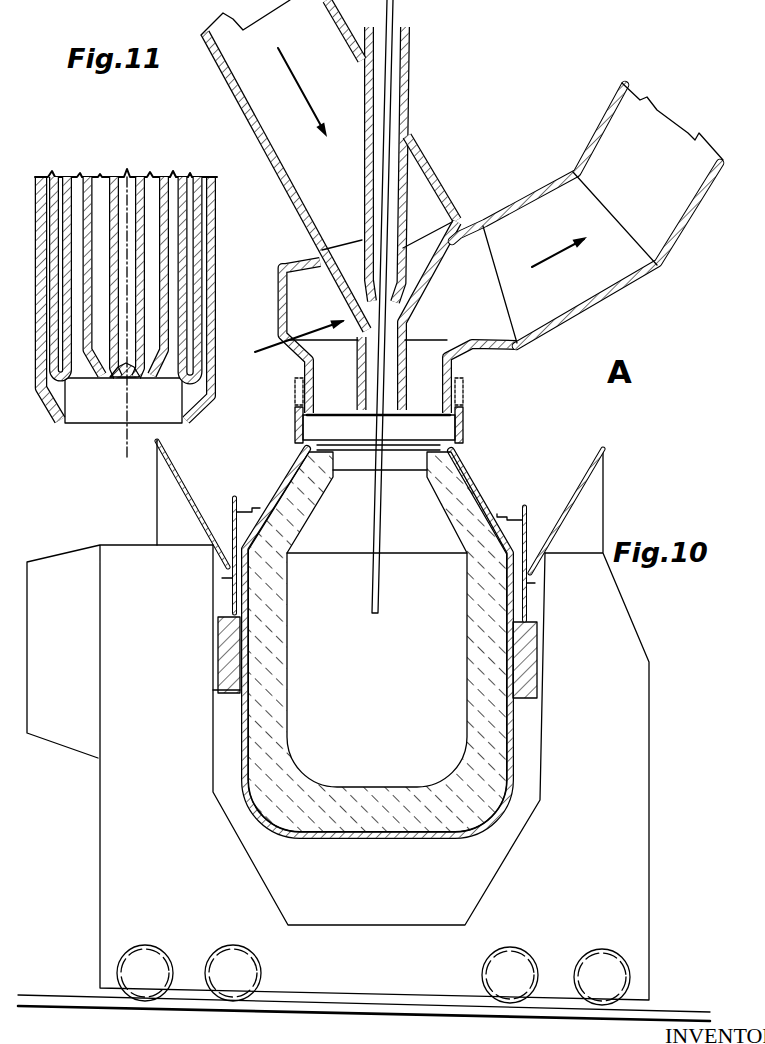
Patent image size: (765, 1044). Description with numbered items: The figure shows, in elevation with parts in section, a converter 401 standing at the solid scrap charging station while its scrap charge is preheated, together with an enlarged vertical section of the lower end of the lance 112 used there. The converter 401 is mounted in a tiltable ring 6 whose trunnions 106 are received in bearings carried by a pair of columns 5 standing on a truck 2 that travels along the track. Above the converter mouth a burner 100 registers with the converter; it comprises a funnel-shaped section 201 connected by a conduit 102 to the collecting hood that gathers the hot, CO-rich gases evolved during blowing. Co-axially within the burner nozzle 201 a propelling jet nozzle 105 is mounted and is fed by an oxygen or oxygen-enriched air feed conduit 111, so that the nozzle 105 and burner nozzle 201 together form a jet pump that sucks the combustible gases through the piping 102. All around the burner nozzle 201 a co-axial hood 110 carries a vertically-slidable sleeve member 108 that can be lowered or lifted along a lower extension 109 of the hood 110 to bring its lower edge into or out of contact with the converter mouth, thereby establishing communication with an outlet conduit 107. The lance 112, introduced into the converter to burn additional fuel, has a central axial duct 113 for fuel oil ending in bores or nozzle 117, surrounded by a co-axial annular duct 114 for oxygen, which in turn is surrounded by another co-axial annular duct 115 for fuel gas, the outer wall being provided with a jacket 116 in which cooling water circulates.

In FIG. 10, the truck 2 is at (410, 947).
In FIG. 10, the column 5 is at (112, 790).
In FIG. 10, the tiltable ring 6 is at (213, 693).
In FIG. 10, the burner 100 is at (331, 345).
In FIG. 10, the conduit 102 is at (237, 102).
In FIG. 10, the propelling jet nozzle 105 is at (370, 297).
In FIG. 10, the trunnion 106 is at (216, 648).
In FIG. 10, the outlet conduit 107 is at (603, 103).
In FIG. 10, the vertically-slidable sleeve member 108 is at (462, 420).
In FIG. 10, the lower extension 109 is at (462, 383).
In FIG. 10, the hood 110 is at (280, 316).
In FIG. 10, the oxygen or oxygen-enriched air feed conduit 111 is at (407, 108).
In FIG. 11, the lance 112 is at (52, 413).
In FIG. 10, the lance 112 is at (374, 510).
In FIG. 11, the central axial duct 113 is at (130, 185).
In FIG. 11, the co-axial annular duct 114 is at (102, 200).
In FIG. 11, the co-axial annular duct 115 is at (78, 180).
In FIG. 11, the jacket 116 is at (60, 180).
In FIG. 11, the bores or nozzle 117 is at (110, 378).
In FIG. 10, the funnel-shaped section 201 is at (415, 292).
In FIG. 10, the converter 401 is at (363, 812).